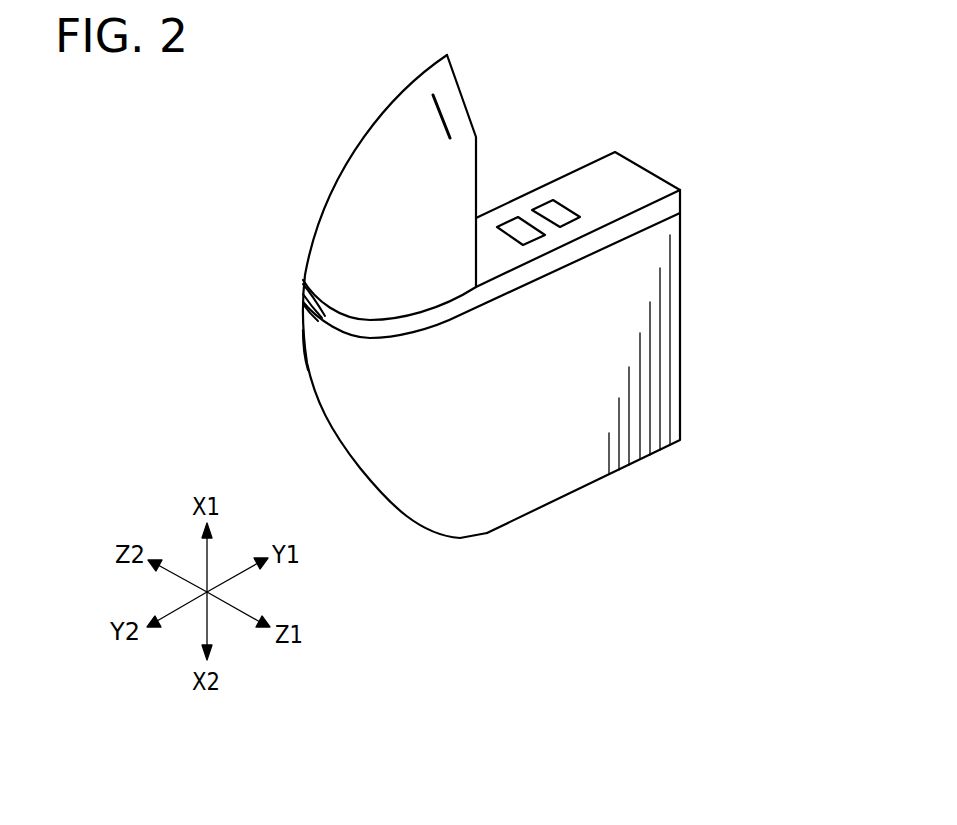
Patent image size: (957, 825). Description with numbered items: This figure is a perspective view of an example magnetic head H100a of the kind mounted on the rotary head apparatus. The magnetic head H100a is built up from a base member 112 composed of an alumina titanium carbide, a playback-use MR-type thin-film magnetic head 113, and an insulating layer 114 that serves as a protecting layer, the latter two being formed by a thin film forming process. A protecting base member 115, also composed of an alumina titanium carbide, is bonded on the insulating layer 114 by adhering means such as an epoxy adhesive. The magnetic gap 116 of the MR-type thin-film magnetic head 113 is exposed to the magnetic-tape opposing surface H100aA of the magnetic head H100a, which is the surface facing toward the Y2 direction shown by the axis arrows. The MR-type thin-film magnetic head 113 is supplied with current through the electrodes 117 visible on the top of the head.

The magnetic head H100a is at (657, 143).
The magnetic-tape opposing surface H100aA is at (314, 352).
The base member 112 is at (558, 463).
The MR-type thin-film magnetic head 113 is at (313, 325).
The insulating layer 114 is at (670, 201).
The protecting base member 115 is at (373, 195).
The magnetic gap 116 is at (303, 285).
The electrodes 117 is at (514, 228).